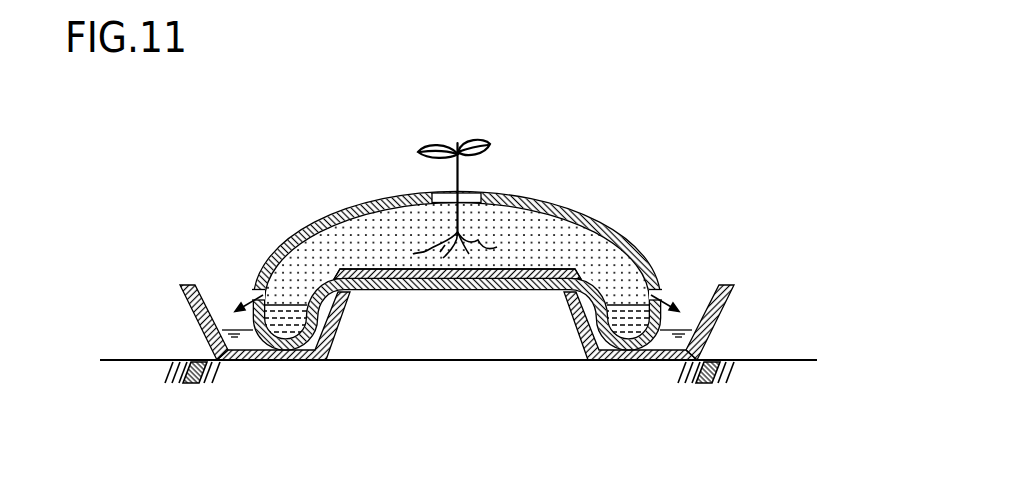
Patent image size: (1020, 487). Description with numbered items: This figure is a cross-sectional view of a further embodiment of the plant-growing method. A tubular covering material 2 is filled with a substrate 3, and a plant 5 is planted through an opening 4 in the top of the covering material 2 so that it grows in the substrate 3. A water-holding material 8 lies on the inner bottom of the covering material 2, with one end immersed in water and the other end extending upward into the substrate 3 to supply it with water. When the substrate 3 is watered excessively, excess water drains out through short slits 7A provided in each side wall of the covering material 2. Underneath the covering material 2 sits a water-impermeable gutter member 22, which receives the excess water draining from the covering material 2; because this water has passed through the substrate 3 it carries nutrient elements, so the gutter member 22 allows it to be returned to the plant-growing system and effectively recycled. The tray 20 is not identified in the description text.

The covering material 2 is at (587, 218).
The substrate 3 is at (344, 210).
The opening 4 is at (470, 194).
The plant 5 is at (478, 143).
The short slits 7A is at (262, 294).
The water-holding material 8 is at (501, 291).
The tray 20 is at (751, 408).
The gutter member 22 is at (183, 309).